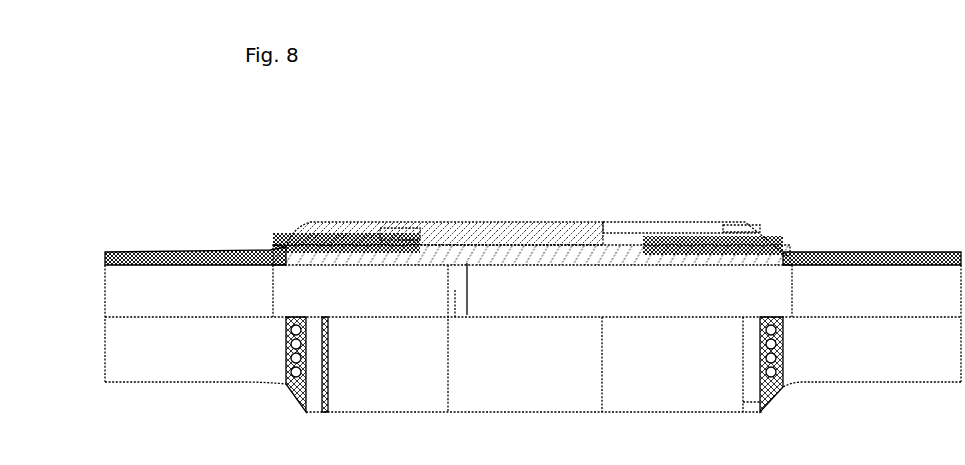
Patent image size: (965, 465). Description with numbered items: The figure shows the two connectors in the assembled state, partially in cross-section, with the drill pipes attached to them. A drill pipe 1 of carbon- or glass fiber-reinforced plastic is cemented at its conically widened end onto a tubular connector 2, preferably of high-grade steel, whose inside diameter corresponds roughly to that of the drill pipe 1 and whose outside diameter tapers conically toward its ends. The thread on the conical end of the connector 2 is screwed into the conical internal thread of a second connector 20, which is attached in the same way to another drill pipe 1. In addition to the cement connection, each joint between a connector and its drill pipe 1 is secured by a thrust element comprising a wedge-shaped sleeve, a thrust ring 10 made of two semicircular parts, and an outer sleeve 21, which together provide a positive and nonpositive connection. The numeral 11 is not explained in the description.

The drill pipe 1 is at (186, 258).
The tubular connector 2 is at (598, 260).
The thrust ring 10 is at (308, 240).
The sealing ring 11 is at (658, 225).
The second connector 20 is at (492, 235).
The outer sleeve 21 is at (395, 232).